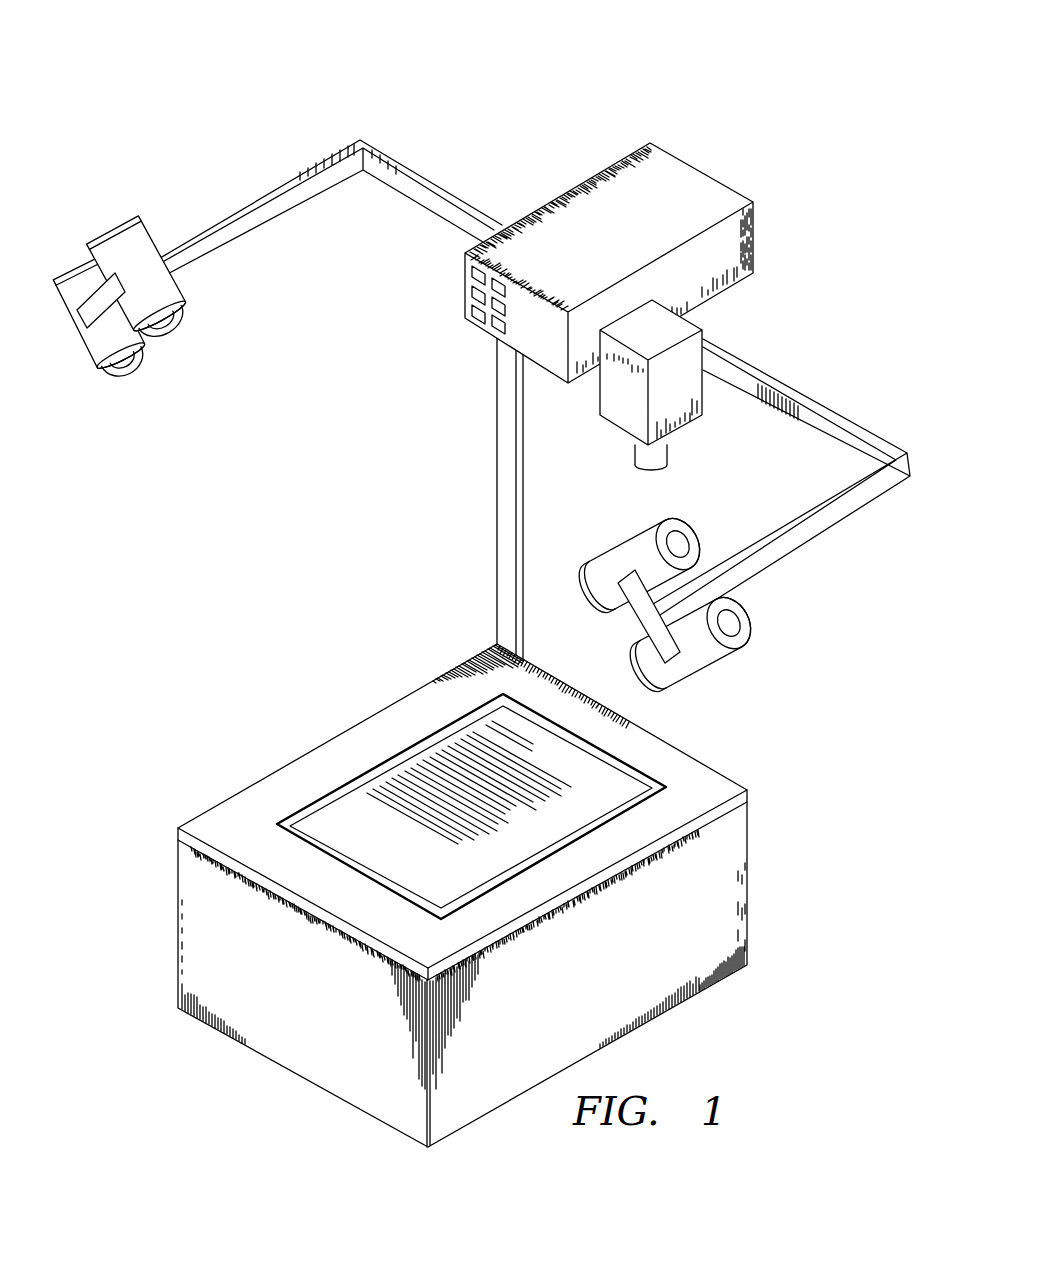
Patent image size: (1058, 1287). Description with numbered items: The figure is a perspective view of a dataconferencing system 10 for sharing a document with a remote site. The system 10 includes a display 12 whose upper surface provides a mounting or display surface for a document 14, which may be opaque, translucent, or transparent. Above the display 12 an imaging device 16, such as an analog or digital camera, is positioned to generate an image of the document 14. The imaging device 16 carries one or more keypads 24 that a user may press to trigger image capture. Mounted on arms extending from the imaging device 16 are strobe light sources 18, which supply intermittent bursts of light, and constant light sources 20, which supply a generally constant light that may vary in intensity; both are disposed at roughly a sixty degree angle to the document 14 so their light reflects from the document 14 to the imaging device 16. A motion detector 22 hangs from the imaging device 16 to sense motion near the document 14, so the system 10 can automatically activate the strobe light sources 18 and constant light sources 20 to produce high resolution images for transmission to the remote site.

The dataconferencing system 10 is at (284, 58).
The display 12 is at (368, 732).
The document 14 is at (317, 826).
The imaging device 16 is at (732, 203).
The strobe light source 18 is at (628, 538).
The constant light source 20 is at (707, 673).
The motion detector 22 is at (687, 410).
The keypad 24 is at (468, 329).